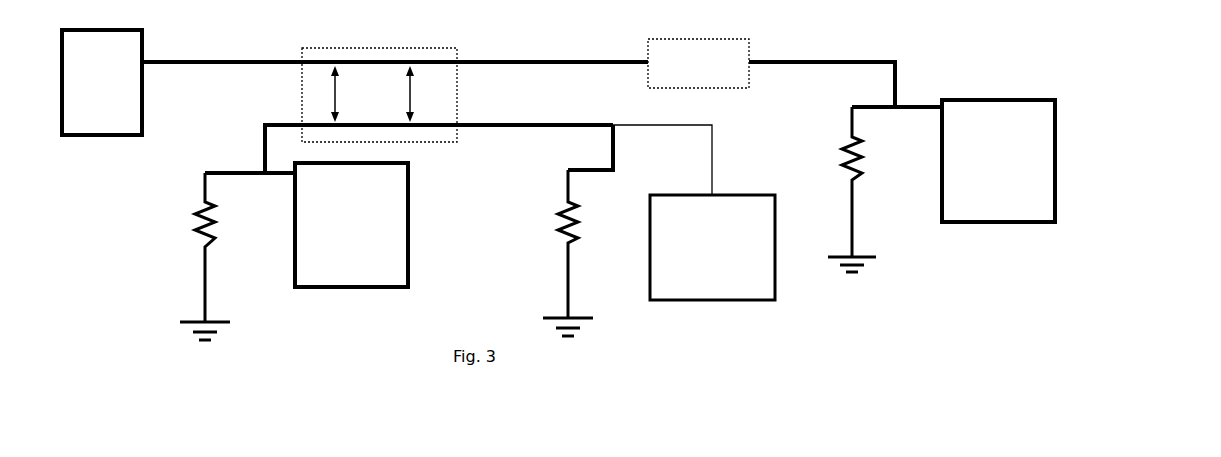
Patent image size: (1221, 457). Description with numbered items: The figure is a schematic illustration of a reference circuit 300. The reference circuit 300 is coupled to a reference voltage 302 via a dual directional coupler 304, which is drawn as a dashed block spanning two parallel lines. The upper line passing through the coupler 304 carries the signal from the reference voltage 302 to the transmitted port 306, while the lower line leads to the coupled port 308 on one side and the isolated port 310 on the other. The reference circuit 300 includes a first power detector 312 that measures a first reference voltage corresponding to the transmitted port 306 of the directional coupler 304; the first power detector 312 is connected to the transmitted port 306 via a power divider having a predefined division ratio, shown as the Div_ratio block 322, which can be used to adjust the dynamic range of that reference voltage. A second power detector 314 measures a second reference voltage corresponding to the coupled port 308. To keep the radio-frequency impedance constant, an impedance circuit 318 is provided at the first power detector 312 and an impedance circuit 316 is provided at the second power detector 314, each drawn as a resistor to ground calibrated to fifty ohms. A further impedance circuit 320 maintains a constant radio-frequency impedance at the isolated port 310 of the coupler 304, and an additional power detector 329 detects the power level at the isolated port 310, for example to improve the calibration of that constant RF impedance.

The reference circuit 300 is at (1102, 144).
The reference voltage 302 is at (142, 31).
The dual directional coupler 304 is at (457, 50).
The transmitted port 306 is at (458, 64).
The coupled port 308 is at (332, 123).
The isolated port 310 is at (428, 123).
The first power detector 312 is at (980, 98).
The second power detector 314 is at (294, 268).
The impedance circuit 316 is at (204, 288).
The impedance circuit 318 is at (852, 214).
The impedance circuit 320 is at (567, 171).
The divider ratio block 322 is at (675, 41).
The additional power detector 329 is at (650, 237).